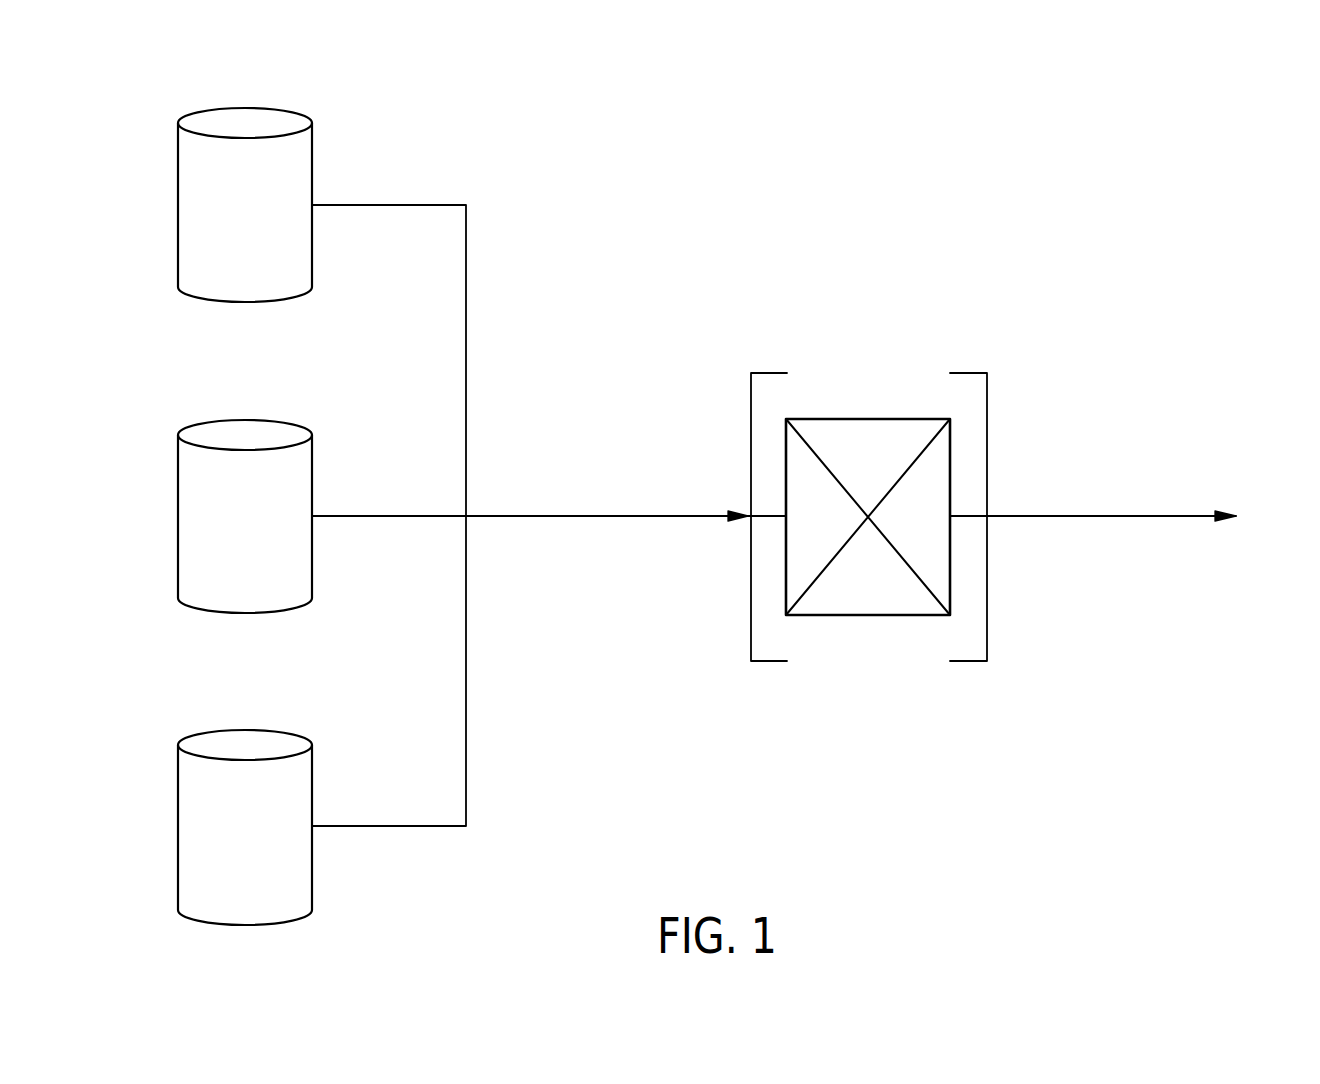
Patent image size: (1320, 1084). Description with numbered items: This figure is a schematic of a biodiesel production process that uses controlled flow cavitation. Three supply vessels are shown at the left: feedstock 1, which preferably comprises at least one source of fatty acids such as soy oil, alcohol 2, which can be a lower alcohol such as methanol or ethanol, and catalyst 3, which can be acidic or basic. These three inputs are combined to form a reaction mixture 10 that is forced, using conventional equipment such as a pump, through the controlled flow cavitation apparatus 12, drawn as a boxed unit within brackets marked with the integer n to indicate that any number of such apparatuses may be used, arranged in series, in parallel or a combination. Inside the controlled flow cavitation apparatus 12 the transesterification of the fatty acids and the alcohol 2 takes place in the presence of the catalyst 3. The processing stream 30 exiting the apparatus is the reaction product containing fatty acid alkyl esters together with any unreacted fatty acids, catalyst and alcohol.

The feedstock 1 is at (245, 106).
The alcohol 2 is at (245, 416).
The catalyst 3 is at (245, 726).
The reaction mixture 10 is at (615, 512).
The controlled flow cavitation apparatus 12 is at (873, 418).
The processing stream 30 is at (1103, 512).